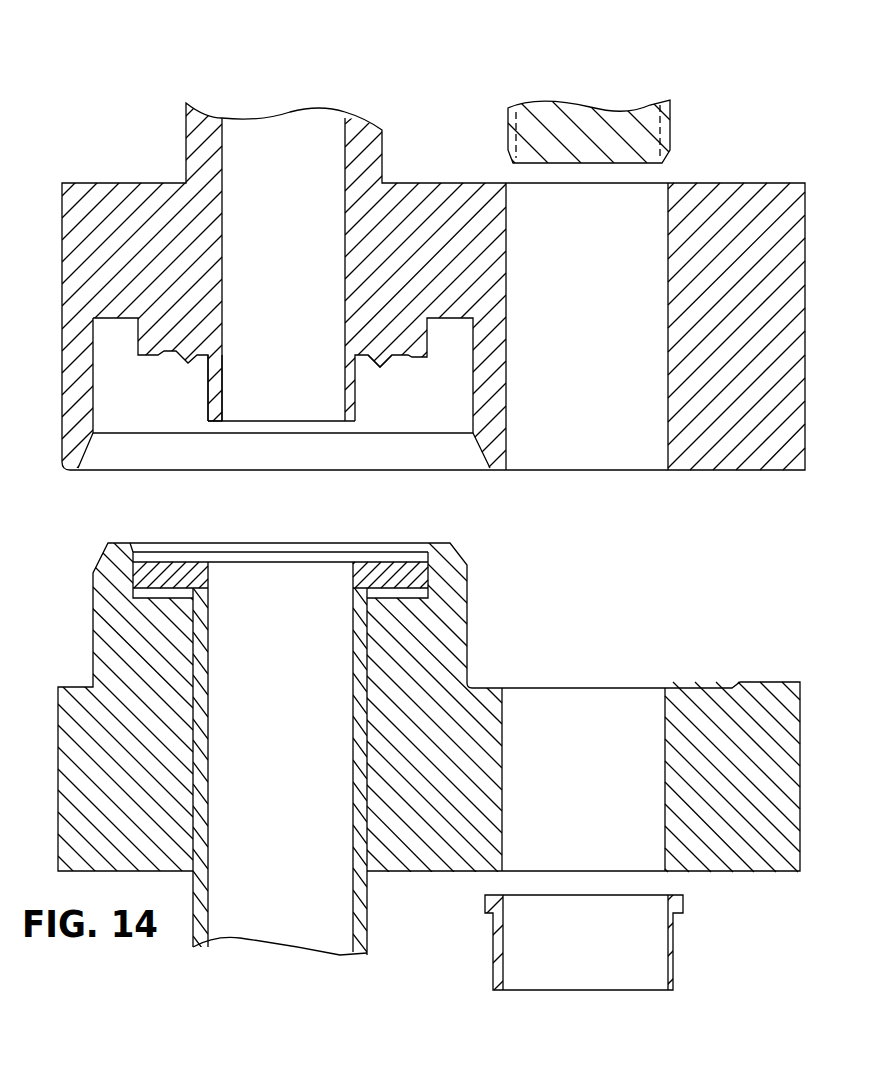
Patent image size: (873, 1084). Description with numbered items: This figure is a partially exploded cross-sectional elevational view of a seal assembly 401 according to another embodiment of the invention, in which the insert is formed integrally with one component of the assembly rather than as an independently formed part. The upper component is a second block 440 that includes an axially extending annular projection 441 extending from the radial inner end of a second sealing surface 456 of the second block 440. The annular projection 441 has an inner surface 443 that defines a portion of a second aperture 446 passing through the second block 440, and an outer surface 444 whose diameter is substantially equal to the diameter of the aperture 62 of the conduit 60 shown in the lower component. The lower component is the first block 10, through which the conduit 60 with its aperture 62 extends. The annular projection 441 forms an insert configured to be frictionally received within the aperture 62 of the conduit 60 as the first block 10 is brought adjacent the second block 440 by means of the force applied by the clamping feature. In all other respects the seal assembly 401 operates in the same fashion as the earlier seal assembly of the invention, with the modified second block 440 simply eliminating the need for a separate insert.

The first block 10 is at (429, 756).
The conduit 60 is at (358, 678).
The aperture of the conduit 62 is at (291, 667).
The seal assembly 401 is at (419, 275).
The second block 440 is at (147, 167).
The annular projection 441 is at (212, 420).
The inner surface 443 is at (222, 383).
The outer surface 444 is at (210, 383).
The second aperture 446 is at (301, 307).
The second sealing surface 456 is at (390, 366).